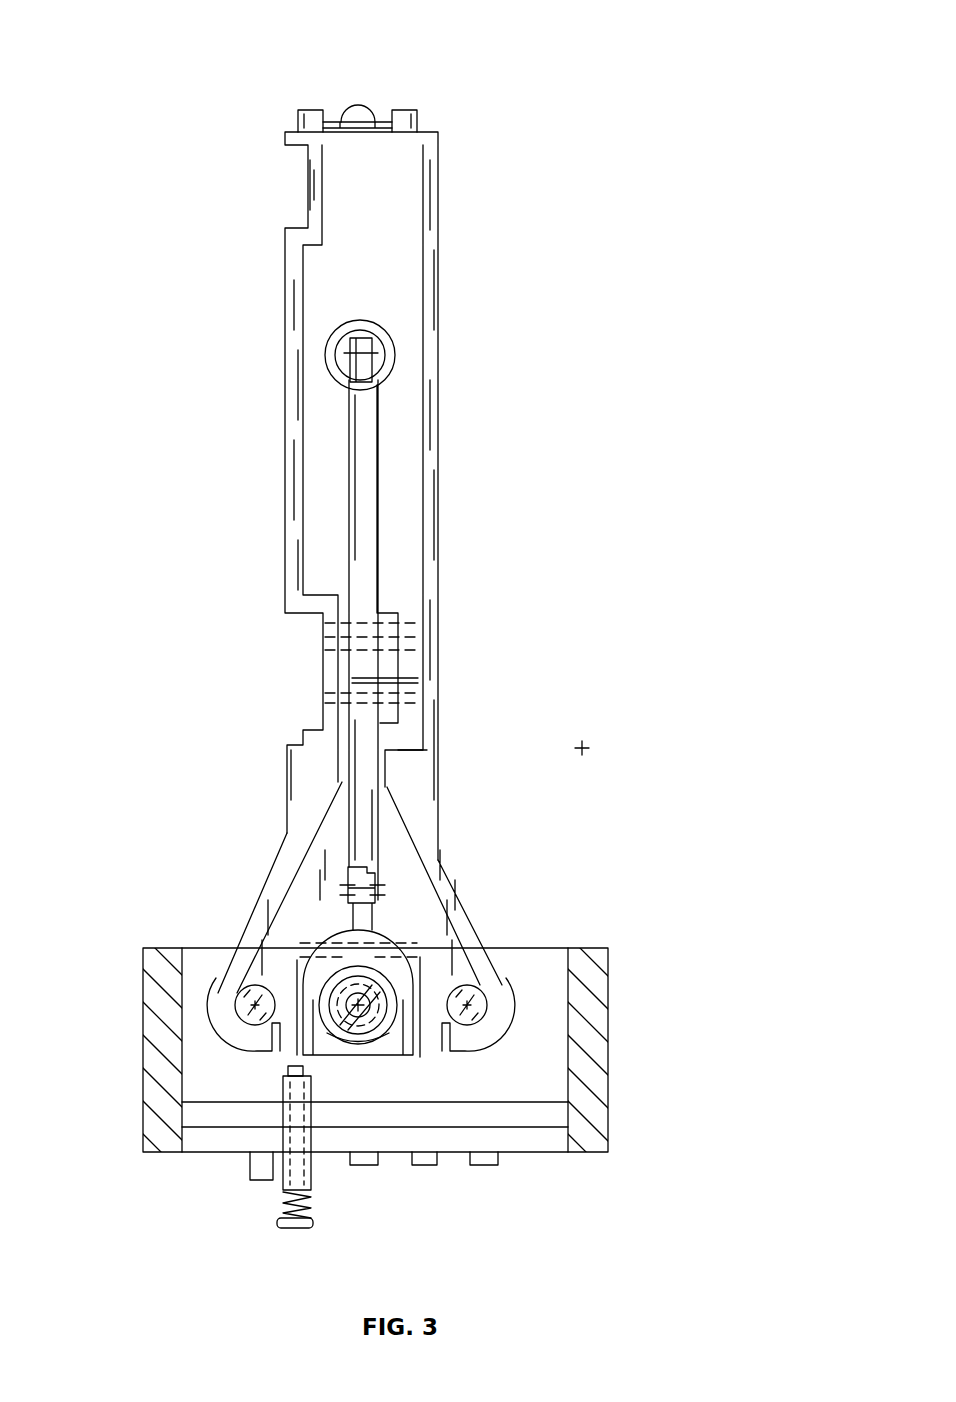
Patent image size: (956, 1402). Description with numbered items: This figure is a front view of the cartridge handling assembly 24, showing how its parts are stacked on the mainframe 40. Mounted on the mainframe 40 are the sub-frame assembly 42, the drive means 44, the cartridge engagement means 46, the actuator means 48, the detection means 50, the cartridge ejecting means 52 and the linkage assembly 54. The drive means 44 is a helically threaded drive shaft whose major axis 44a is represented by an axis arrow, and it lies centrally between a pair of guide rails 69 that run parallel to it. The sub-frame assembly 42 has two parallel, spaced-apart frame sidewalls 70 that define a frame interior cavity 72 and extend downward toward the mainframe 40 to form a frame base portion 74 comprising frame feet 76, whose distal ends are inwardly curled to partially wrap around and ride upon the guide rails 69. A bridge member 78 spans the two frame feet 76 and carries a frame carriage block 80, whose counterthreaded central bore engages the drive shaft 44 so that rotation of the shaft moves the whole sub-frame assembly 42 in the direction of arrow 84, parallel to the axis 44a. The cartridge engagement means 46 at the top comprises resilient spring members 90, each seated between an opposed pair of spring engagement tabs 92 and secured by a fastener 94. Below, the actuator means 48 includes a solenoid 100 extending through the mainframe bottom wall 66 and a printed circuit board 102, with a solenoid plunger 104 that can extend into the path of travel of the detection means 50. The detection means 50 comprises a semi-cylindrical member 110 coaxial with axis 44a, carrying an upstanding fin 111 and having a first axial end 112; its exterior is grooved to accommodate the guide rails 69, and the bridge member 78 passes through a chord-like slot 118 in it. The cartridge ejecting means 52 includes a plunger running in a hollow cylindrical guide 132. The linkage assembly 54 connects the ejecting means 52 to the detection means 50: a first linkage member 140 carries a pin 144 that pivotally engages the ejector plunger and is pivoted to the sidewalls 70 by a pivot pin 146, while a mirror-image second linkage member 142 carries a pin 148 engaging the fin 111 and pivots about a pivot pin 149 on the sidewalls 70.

The cartridge handling assembly 24 is at (624, 480).
The mainframe 40 is at (606, 678).
The sub-frame assembly 42 is at (531, 311).
The helical drive shaft 44 is at (357, 1022).
The major axis 44a is at (372, 1022).
The cartridge engagement means 46 is at (364, 52).
The actuator means 48 is at (228, 1210).
The detection means 50 is at (432, 913).
The cartridge ejecting means 52 is at (350, 306).
The linkage assembly 54 is at (400, 537).
The mainframe bottom wall 66 is at (512, 1115).
The guide rails 69 is at (238, 1003).
The frame sidewalls 70 is at (438, 240).
The frame interior cavity 72 is at (357, 204).
The frame base portion 74 is at (212, 850).
The frame feet 76 is at (215, 970).
The bridge member 78 is at (285, 985).
The frame carriage block 80 is at (440, 905).
The direction of travel arrow 84 is at (584, 744).
The resilient spring members 90 is at (336, 118).
The spring engagement tabs 92 is at (298, 116).
The fastener 94 is at (372, 110).
The solenoid 100 is at (313, 1175).
The printed circuit board 102 is at (447, 1145).
The solenoid plunger 104 is at (285, 1072).
The semi-cylindrical member 110 is at (262, 985).
The upstanding fin 111 is at (355, 898).
The first axial end 112 is at (400, 1040).
The chord-like slot 118 is at (437, 855).
The hollow cylindrical guide 132 is at (360, 322).
The first linkage member 140 is at (365, 423).
The second linkage member 142 is at (360, 728).
The pin 144 is at (382, 354).
The pivot pin 146 is at (418, 628).
The pin 148 is at (365, 875).
The pivot pin 149 is at (418, 695).